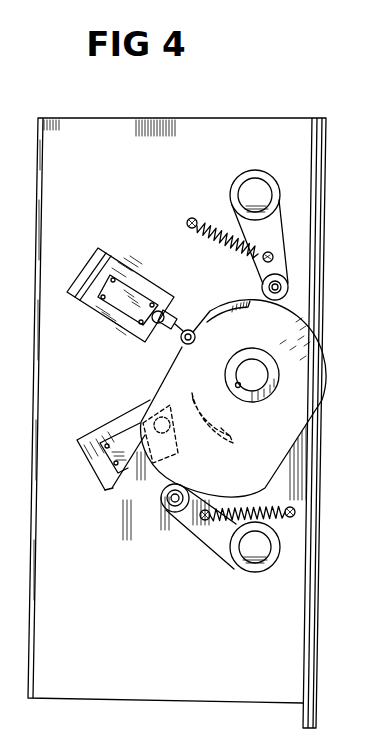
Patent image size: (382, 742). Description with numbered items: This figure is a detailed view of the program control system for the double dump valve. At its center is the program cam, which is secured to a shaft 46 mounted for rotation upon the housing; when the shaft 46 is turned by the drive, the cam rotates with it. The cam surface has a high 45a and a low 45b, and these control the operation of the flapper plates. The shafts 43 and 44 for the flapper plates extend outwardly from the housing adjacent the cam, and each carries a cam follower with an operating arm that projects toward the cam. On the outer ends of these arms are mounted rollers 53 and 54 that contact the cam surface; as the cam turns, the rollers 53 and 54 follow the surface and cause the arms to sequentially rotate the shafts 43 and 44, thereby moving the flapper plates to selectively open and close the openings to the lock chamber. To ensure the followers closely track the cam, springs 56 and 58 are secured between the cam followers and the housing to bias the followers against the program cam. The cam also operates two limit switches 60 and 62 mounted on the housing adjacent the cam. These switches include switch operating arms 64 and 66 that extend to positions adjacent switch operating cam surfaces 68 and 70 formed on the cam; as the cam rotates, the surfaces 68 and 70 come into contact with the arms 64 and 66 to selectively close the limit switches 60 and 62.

The shaft 43 is at (263, 188).
The shaft 44 is at (253, 553).
The high of cam surface 45a is at (113, 487).
The low of cam surface 45b is at (300, 322).
The shaft 46 is at (255, 370).
The roller 53 is at (290, 288).
The roller 54 is at (158, 502).
The spring 56 is at (257, 250).
The spring 58 is at (283, 517).
The limit switch 60 is at (125, 272).
The limit switch 62 is at (110, 443).
The switch operating arm 64 is at (185, 330).
The switch operating arm 66 is at (193, 400).
The switch operating cam surface 68 is at (235, 303).
The switch operating cam surface 70 is at (233, 434).